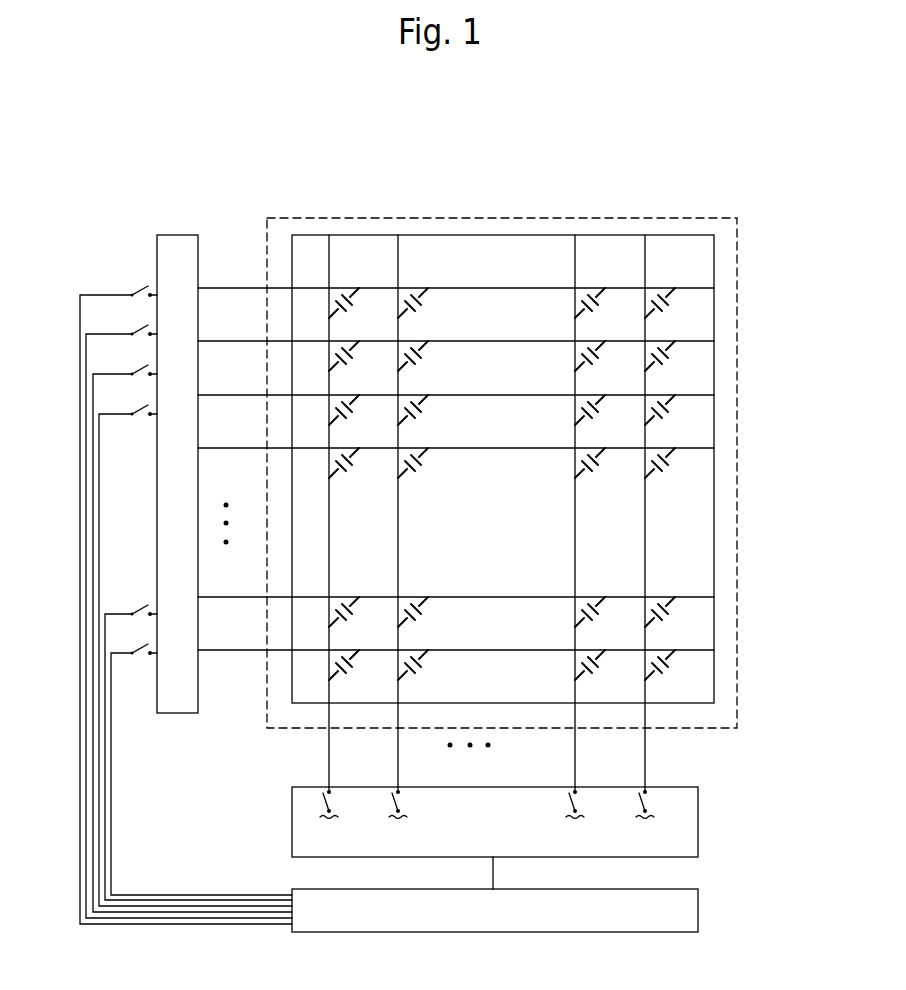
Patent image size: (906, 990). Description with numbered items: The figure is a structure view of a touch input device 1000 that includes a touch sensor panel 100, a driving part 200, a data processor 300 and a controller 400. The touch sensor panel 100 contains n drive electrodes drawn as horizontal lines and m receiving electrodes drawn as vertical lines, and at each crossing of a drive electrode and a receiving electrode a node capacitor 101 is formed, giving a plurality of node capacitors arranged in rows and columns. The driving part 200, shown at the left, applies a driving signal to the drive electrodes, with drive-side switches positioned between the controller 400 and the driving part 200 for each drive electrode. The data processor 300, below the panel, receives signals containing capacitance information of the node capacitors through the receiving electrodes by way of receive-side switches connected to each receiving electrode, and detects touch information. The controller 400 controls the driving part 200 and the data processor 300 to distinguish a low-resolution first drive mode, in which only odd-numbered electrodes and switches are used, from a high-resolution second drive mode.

The touch sensor panel 100 is at (700, 176).
The touch input device 1000 is at (716, 213).
The node capacitor 101 is at (415, 295).
The driving part 200 is at (178, 235).
The data processor 300 is at (698, 823).
The controller 400 is at (698, 910).